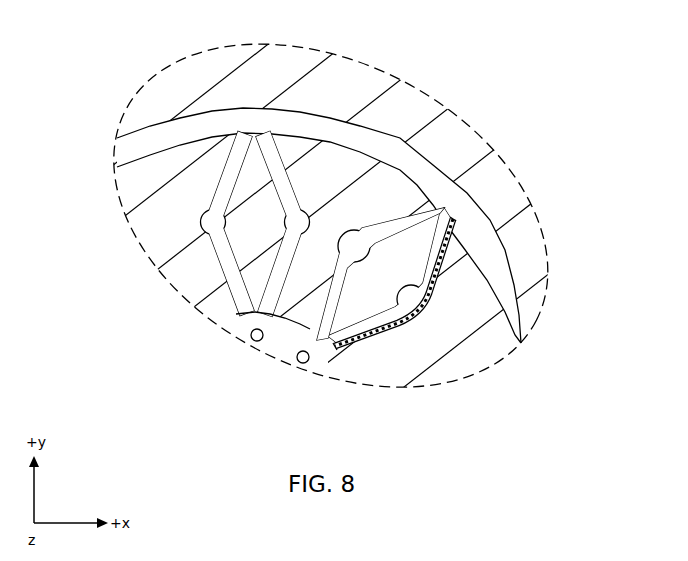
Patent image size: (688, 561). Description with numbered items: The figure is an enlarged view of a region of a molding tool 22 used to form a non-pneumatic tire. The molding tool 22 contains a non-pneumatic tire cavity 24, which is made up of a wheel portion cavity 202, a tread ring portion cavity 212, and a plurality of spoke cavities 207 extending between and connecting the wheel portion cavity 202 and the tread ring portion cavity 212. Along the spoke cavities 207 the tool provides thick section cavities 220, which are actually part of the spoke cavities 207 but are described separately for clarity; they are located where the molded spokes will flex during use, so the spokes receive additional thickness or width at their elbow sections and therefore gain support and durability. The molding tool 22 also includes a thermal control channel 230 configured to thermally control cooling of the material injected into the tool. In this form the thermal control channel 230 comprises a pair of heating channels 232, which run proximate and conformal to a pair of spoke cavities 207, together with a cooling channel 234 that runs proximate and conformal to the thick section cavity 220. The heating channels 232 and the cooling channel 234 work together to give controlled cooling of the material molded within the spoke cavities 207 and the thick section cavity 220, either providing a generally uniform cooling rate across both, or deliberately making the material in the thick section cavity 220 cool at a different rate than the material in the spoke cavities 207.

The molding tool 22 is at (441, 88).
The non-pneumatic tire cavity 24 is at (314, 108).
The tread ring portion cavity 212 is at (420, 163).
The thick section cavities 220 is at (213, 223).
The spoke cavities 207 is at (227, 267).
The wheel portion cavity 202 is at (280, 343).
The heating channels 232 is at (370, 340).
The thermal control channel 230 is at (458, 317).
The cooling channel 234 is at (427, 313).